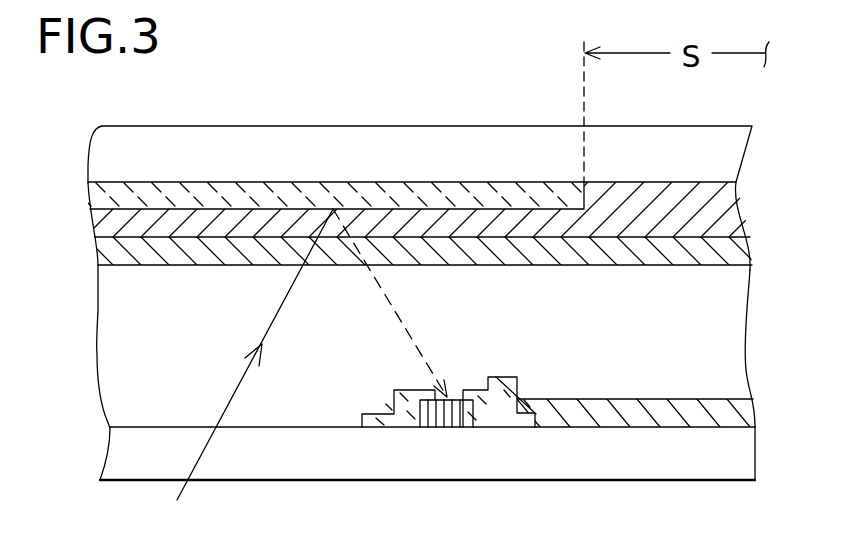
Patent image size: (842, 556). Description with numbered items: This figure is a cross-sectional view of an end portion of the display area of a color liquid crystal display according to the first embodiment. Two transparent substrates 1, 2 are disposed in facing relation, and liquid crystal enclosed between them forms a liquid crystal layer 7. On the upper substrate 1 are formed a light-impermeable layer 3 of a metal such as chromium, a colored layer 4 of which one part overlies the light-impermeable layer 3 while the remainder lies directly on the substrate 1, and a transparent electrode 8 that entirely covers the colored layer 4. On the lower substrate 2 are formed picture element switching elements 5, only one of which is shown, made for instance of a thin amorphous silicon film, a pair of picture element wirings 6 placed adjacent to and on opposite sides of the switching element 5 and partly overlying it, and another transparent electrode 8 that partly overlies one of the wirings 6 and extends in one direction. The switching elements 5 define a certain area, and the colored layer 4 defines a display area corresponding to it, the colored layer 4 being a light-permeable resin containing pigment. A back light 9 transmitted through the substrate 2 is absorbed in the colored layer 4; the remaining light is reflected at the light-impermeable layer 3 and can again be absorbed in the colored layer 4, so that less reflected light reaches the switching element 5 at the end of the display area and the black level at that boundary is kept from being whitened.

The transparent substrate 1 is at (728, 138).
The transparent substrate 2 is at (692, 453).
The light-impermeable layer 3 is at (517, 180).
The colored layer 4 is at (730, 212).
The picture element switching element 5 is at (460, 427).
The picture element wiring 6 is at (412, 427).
The liquid crystal layer 7 is at (730, 320).
The transparent electrode 8 is at (732, 246).
The back light 9 is at (300, 374).